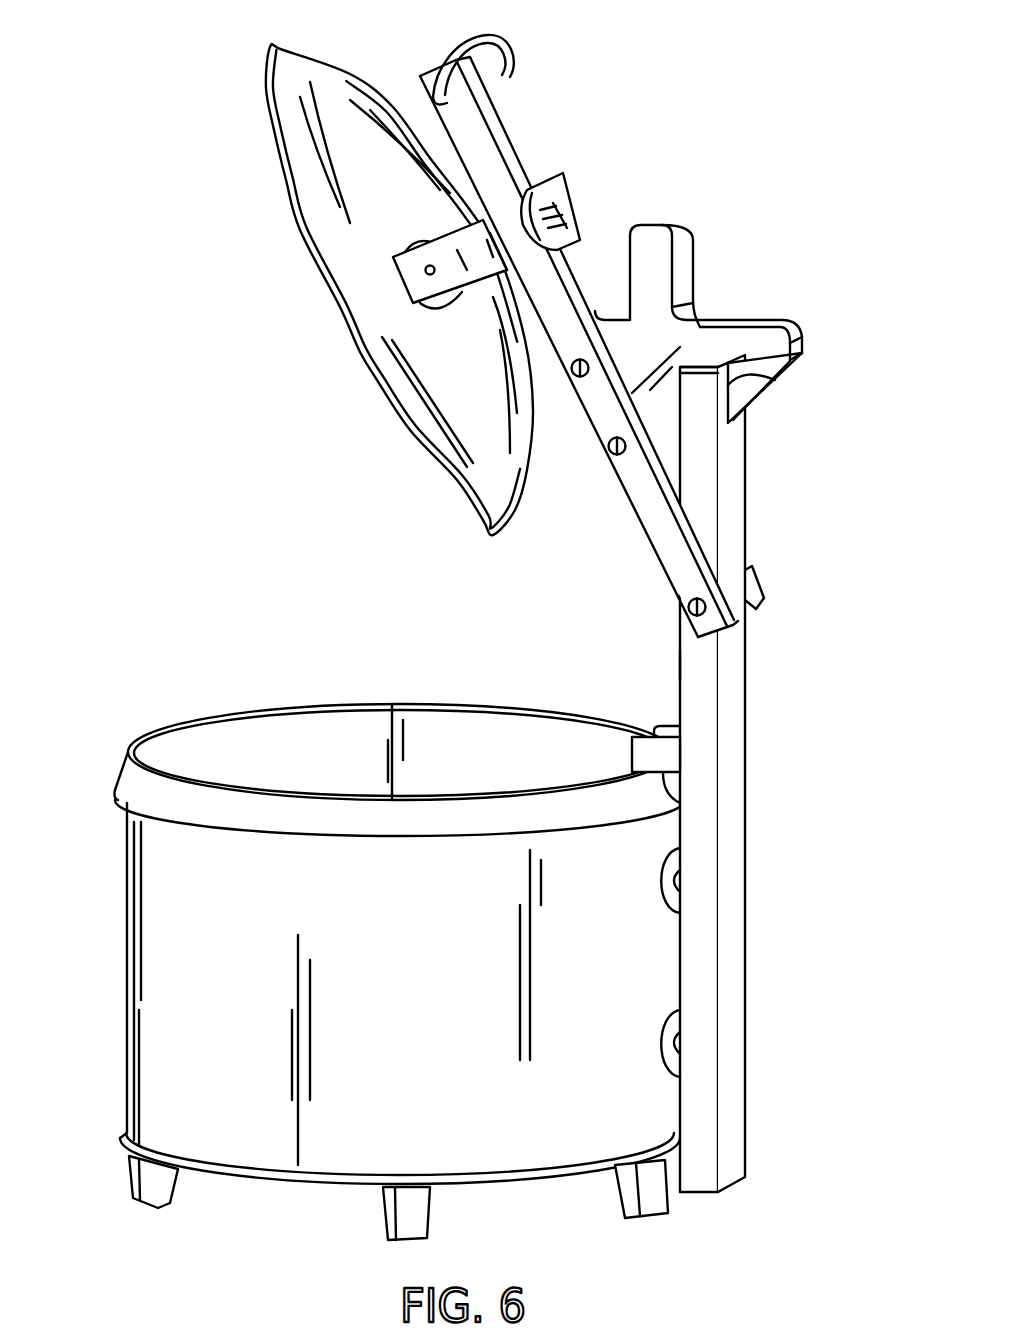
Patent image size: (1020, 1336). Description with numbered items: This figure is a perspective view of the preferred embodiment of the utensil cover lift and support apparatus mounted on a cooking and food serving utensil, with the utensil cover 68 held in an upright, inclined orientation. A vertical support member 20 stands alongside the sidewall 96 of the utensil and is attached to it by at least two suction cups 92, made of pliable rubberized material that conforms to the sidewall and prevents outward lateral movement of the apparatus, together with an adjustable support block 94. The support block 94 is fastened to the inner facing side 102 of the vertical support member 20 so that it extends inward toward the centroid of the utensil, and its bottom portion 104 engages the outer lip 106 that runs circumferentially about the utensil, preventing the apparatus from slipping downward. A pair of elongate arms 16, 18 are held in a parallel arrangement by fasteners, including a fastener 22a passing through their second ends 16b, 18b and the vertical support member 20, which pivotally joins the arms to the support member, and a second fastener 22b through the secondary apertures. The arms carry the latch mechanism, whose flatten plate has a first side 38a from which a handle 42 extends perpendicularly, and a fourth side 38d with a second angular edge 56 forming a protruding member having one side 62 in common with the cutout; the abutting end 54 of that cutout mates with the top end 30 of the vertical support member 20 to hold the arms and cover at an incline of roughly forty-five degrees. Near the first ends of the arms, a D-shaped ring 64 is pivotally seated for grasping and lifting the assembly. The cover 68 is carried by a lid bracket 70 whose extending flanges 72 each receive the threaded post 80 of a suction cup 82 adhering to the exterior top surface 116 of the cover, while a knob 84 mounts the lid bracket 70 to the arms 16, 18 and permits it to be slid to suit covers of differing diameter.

The elongate arm 16 is at (664, 570).
The second end of elongate arm 16b is at (735, 628).
The elongate arm 18 is at (527, 123).
The second end of elongate arm 18b is at (752, 585).
The vertical support member 20 is at (748, 710).
The fastener 22a is at (688, 605).
The fastener 22b is at (616, 456).
The top end of vertical support member 30 is at (708, 370).
The first side of flatten plate 38a is at (782, 318).
The fourth side of flatten plate 38d is at (806, 350).
The handle 42 is at (692, 228).
The abutting end 54 is at (693, 366).
The second angular edge 56 is at (752, 412).
The side of protruding member 62 is at (768, 380).
The D-shaped ring 64 is at (508, 42).
The utensil cover 68 is at (433, 488).
The lid bracket 70 is at (455, 338).
The extending flange 72 is at (426, 274).
The threaded post 80 is at (412, 300).
The suction cup 82 is at (402, 248).
The knob 84 is at (563, 173).
The suction cup 92 is at (663, 1007).
The adjustable support block 94 is at (660, 727).
The sidewall 96 is at (125, 985).
The inner facing side 102 is at (680, 663).
The bottom portion of support block 104 is at (676, 800).
The outer lip 106 is at (114, 770).
The exterior top surface 116 is at (402, 193).